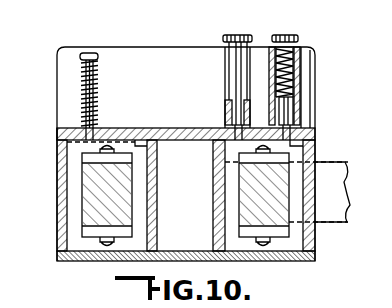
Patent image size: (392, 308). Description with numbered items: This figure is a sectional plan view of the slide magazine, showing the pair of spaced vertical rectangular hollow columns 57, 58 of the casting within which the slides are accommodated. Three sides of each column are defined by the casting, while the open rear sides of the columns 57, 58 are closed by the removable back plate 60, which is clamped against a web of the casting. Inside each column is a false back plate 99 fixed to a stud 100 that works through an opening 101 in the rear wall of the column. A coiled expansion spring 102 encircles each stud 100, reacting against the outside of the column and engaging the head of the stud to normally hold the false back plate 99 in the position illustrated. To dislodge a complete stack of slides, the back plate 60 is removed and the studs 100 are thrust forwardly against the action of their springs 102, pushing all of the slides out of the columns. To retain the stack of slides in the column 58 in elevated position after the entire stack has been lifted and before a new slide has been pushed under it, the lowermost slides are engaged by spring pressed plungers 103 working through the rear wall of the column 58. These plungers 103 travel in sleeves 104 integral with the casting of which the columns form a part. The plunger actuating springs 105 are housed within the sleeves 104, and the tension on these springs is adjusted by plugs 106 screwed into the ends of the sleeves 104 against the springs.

The column 57 is at (58, 219).
The column 58 is at (309, 212).
The back plate 60 is at (103, 259).
The false back plate 99 is at (125, 133).
The stud 100 is at (80, 77).
The opening 101 is at (57, 133).
The coiled expansion spring 102 is at (80, 101).
The spring pressed plunger 103 is at (232, 112).
The sleeve 104 is at (297, 78).
The plunger actuating spring 105 is at (297, 88).
The plug 106 is at (299, 50).